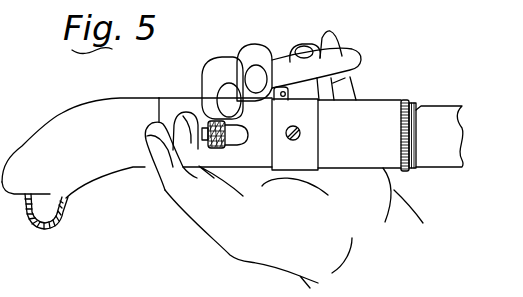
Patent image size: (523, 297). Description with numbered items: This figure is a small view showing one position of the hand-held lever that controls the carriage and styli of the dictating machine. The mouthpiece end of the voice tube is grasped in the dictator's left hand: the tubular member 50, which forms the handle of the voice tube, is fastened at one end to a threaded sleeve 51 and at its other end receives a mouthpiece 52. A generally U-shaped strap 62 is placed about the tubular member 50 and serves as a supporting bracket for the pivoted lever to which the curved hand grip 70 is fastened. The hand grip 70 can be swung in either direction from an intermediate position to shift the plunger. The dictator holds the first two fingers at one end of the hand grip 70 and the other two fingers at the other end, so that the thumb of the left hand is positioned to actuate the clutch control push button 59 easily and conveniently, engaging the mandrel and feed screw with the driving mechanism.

The tubular member 50 is at (380, 115).
The threaded sleeve 51 is at (442, 120).
The mouthpiece 52 is at (70, 123).
The push button 59 is at (175, 112).
The strap 62 is at (308, 120).
The hand grip 70 is at (283, 78).